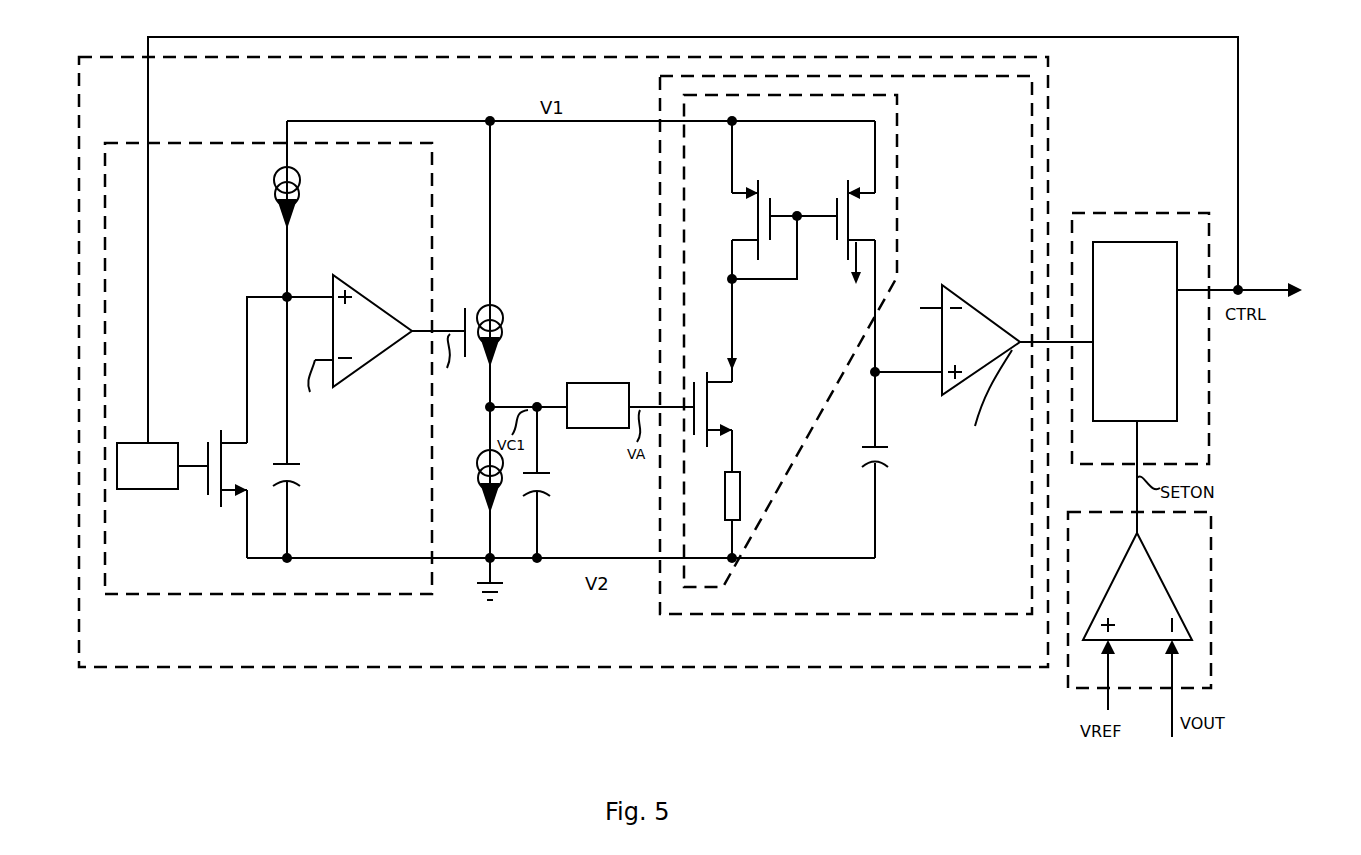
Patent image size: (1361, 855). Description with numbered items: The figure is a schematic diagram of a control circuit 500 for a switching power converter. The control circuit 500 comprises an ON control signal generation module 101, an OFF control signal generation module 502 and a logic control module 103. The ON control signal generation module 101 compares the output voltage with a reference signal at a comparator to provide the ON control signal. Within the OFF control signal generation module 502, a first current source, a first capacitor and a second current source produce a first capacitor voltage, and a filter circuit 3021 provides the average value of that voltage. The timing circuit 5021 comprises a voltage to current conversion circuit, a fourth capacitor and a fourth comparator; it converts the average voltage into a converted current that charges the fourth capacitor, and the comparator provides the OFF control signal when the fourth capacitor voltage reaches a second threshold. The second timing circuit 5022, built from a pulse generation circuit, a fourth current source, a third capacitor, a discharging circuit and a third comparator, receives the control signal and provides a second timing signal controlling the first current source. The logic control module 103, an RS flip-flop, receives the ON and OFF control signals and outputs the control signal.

The control circuit 500 is at (1262, 160).
The OFF control signal generation module 502 is at (597, 667).
The second timing circuit 5022 is at (265, 596).
The timing circuit 5021 is at (865, 614).
The filter circuit 3021 is at (583, 383).
The logic control module 103 is at (1165, 214).
The ON control signal generation module 101 is at (1160, 600).